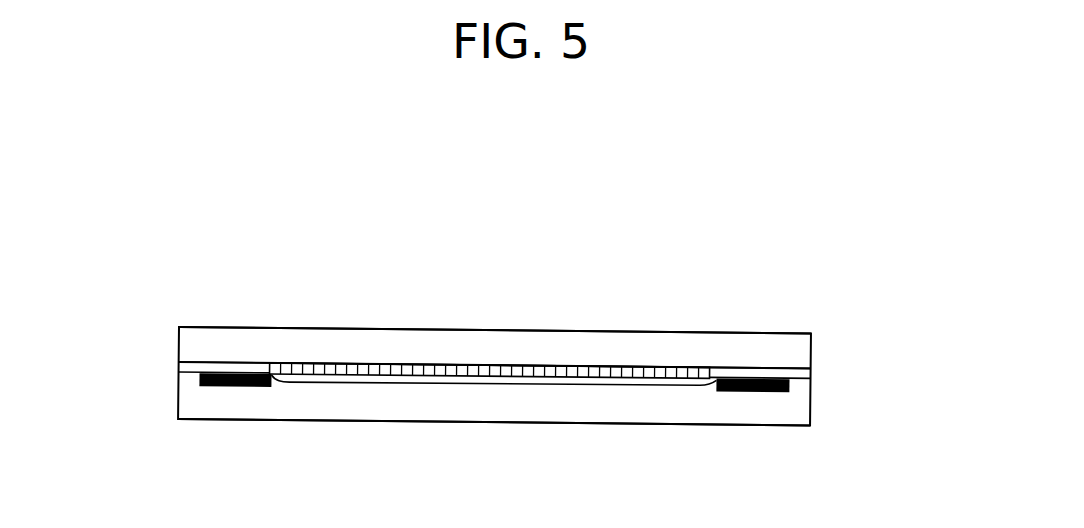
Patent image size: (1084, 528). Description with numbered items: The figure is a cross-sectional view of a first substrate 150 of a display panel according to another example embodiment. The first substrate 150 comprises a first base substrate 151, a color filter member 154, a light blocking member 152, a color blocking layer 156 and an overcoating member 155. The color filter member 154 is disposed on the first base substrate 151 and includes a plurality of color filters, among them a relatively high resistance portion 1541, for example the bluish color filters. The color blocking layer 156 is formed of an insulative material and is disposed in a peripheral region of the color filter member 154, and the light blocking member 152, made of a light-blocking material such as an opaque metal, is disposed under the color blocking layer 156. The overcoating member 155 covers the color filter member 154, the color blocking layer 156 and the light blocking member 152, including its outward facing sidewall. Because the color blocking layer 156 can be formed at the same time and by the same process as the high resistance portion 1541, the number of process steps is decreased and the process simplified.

The first substrate 150 is at (591, 274).
The first base substrate 151 is at (811, 348).
The light blocking member 152 is at (228, 388).
The color filter member 154 is at (503, 381).
The relatively high resistance portion 1541 is at (357, 363).
The overcoating member 155 is at (806, 414).
The color blocking layer 156 is at (183, 367).